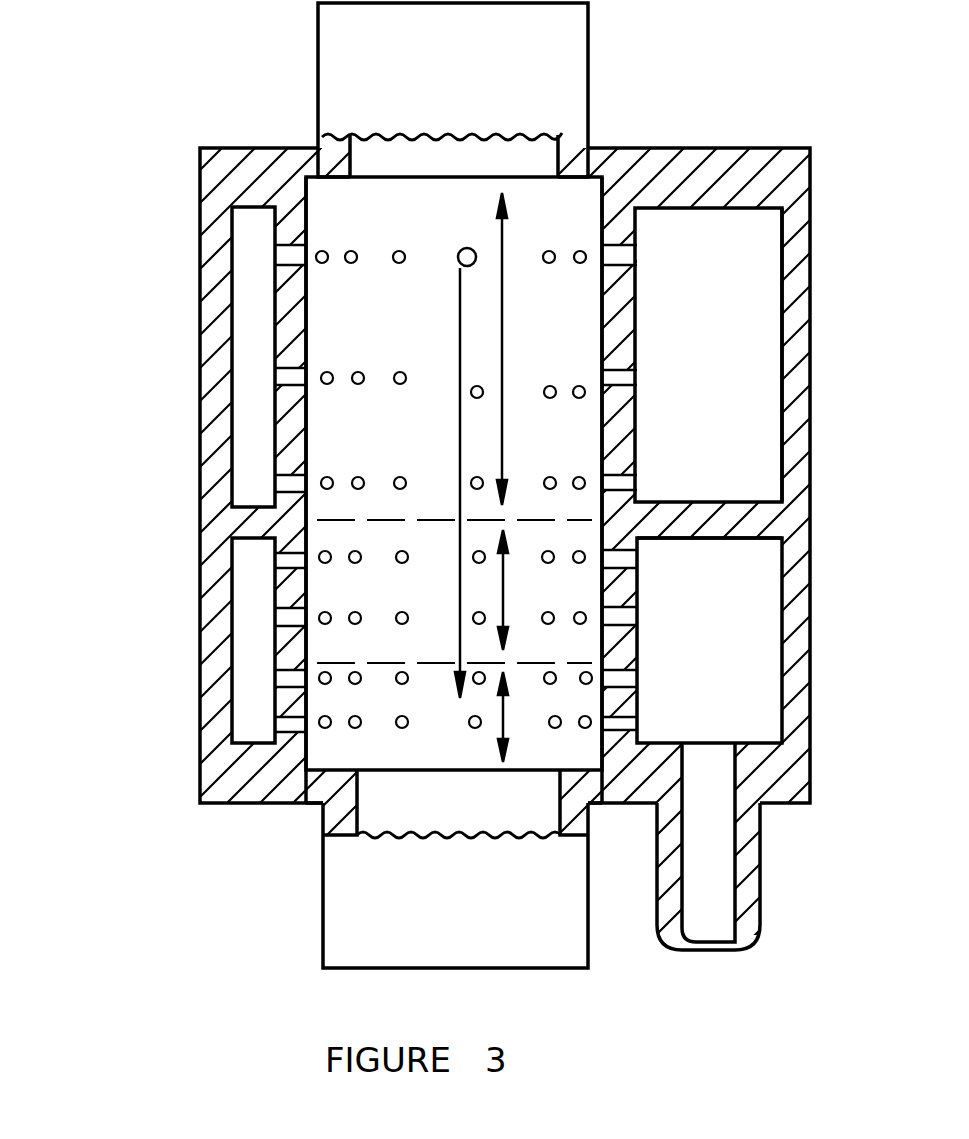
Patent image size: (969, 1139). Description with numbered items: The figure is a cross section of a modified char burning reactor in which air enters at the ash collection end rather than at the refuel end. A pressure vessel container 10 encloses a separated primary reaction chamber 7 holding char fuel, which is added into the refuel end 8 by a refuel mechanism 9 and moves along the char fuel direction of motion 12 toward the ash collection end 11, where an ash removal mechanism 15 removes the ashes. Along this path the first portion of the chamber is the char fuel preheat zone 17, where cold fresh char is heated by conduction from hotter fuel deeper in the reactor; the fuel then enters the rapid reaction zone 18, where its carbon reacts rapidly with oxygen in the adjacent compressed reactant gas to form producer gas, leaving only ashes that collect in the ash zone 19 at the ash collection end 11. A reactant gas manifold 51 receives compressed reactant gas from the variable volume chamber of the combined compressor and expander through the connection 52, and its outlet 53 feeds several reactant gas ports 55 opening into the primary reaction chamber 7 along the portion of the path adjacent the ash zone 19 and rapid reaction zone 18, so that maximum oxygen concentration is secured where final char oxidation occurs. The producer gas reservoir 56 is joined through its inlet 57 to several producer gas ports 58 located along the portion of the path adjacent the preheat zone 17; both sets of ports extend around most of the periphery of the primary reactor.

The primary reaction chamber 7 is at (565, 200).
The refuel end 8 is at (375, 198).
The refuel mechanism 9 is at (537, 78).
The pressure vessel container 10 is at (210, 197).
The ash collection end 11 is at (350, 758).
The char fuel direction of motion 12 is at (460, 430).
The ash removal mechanism 15 is at (347, 913).
The char fuel preheat zone 17 is at (505, 340).
The rapid reaction zone 18 is at (505, 597).
The ash zone 19 is at (505, 728).
The reactant gas manifold 51 is at (253, 722).
The connection 52 is at (710, 893).
The outlet 53 is at (648, 623).
The reactant gas ports 55 is at (357, 620).
The producer gas reservoir 56 is at (245, 283).
The inlet 57 is at (648, 398).
The producer gas ports 58 is at (290, 378).